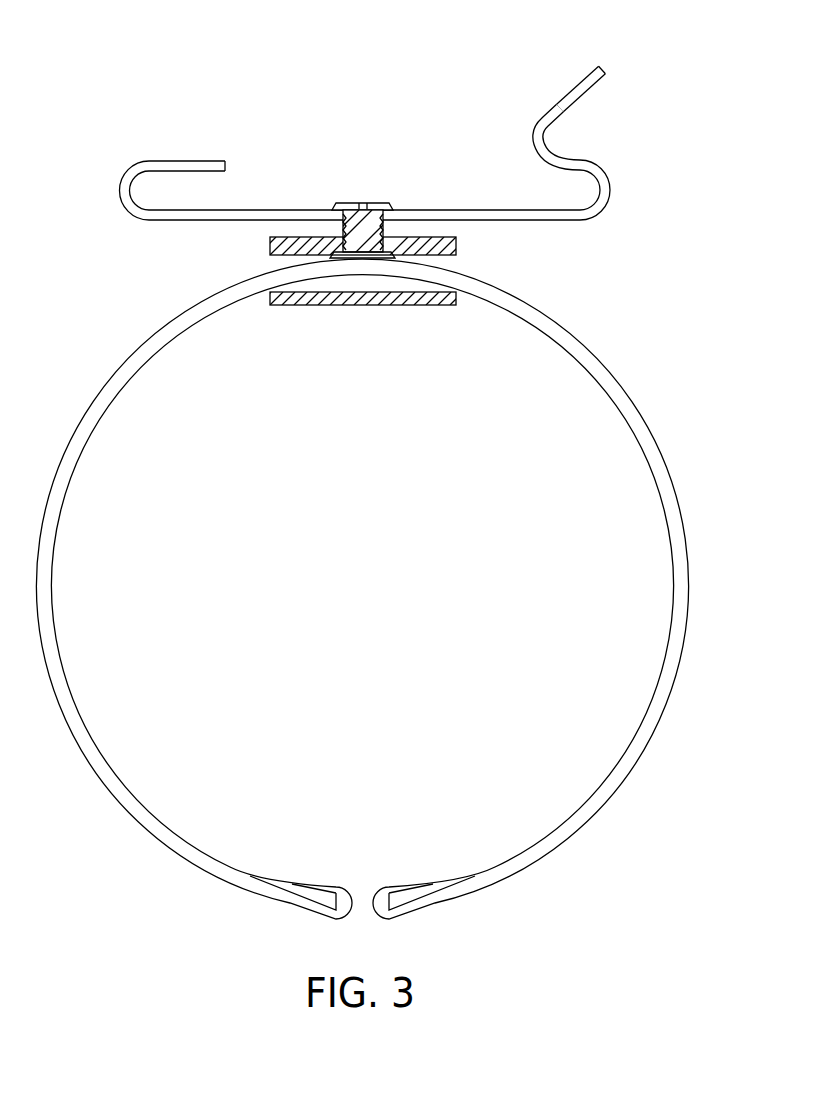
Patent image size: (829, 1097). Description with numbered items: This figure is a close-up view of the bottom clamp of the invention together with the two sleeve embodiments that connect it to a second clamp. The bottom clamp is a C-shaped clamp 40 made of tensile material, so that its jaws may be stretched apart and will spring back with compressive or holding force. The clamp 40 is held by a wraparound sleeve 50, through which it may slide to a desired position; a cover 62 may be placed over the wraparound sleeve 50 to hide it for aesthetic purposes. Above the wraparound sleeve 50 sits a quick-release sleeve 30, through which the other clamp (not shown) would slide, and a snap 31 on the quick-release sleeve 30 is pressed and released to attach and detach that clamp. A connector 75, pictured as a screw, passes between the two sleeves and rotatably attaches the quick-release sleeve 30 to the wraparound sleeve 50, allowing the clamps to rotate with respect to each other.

The quick-release sleeve 30 is at (587, 219).
The snap 31 is at (580, 77).
The C-shaped clamp 40 is at (688, 583).
The wraparound sleeve 50 is at (385, 307).
The cover 62 is at (270, 260).
The connector 75 is at (374, 201).